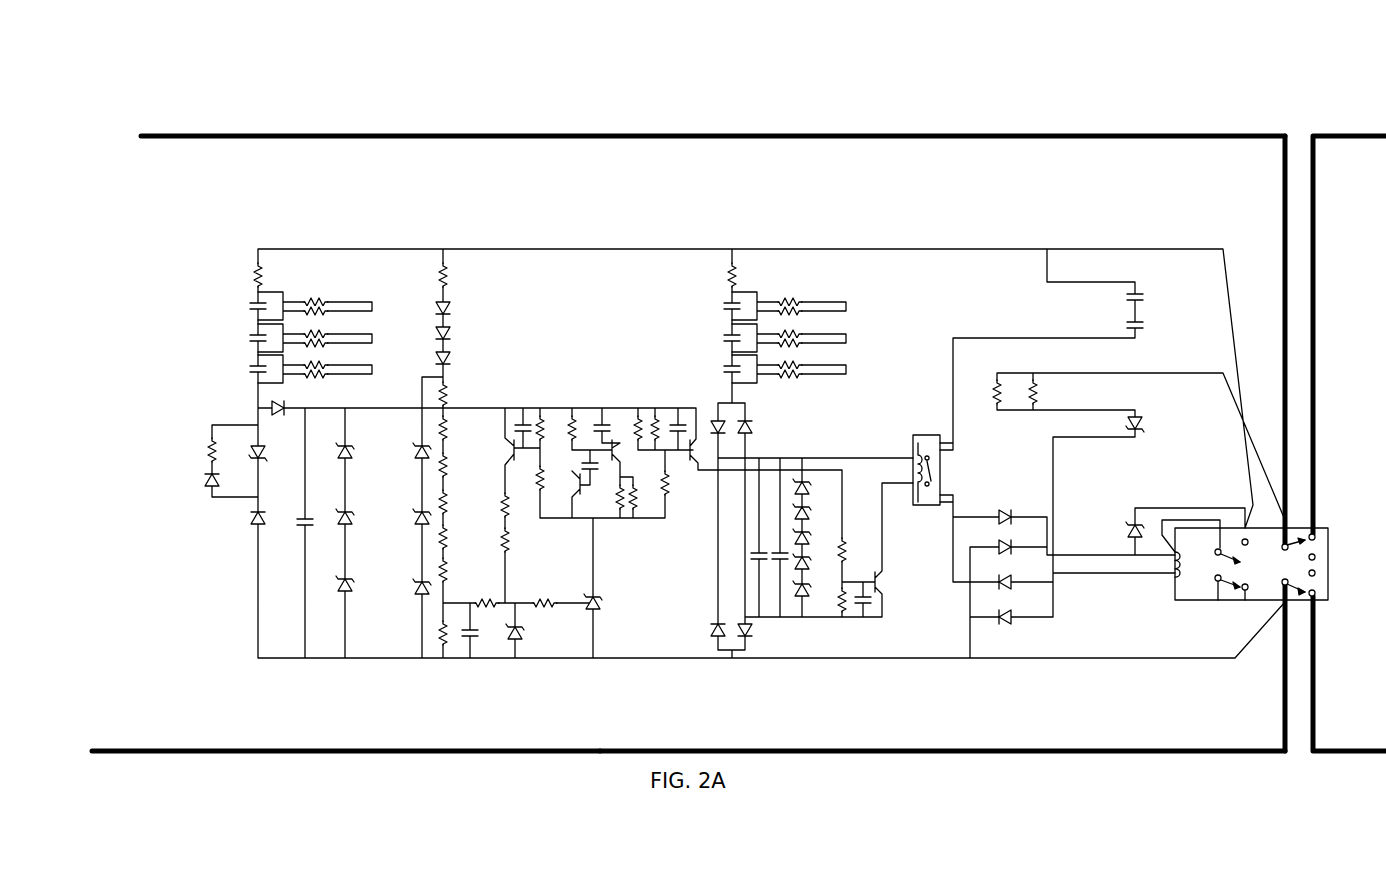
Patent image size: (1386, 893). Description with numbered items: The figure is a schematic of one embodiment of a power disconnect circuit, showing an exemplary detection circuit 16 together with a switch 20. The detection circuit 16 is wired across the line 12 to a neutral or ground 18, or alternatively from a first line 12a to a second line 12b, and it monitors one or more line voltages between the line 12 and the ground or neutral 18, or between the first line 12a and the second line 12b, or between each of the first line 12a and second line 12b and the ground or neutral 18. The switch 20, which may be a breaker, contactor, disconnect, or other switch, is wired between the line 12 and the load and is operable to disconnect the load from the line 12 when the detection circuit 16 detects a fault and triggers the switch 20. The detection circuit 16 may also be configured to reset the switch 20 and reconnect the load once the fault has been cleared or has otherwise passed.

The line 12 is at (739, 434).
The first line 12a is at (796, 141).
The second line 12b is at (1002, 749).
The detection circuit 16 is at (714, 439).
The ground or neutral 18 is at (186, 754).
The switch 20 is at (1263, 585).